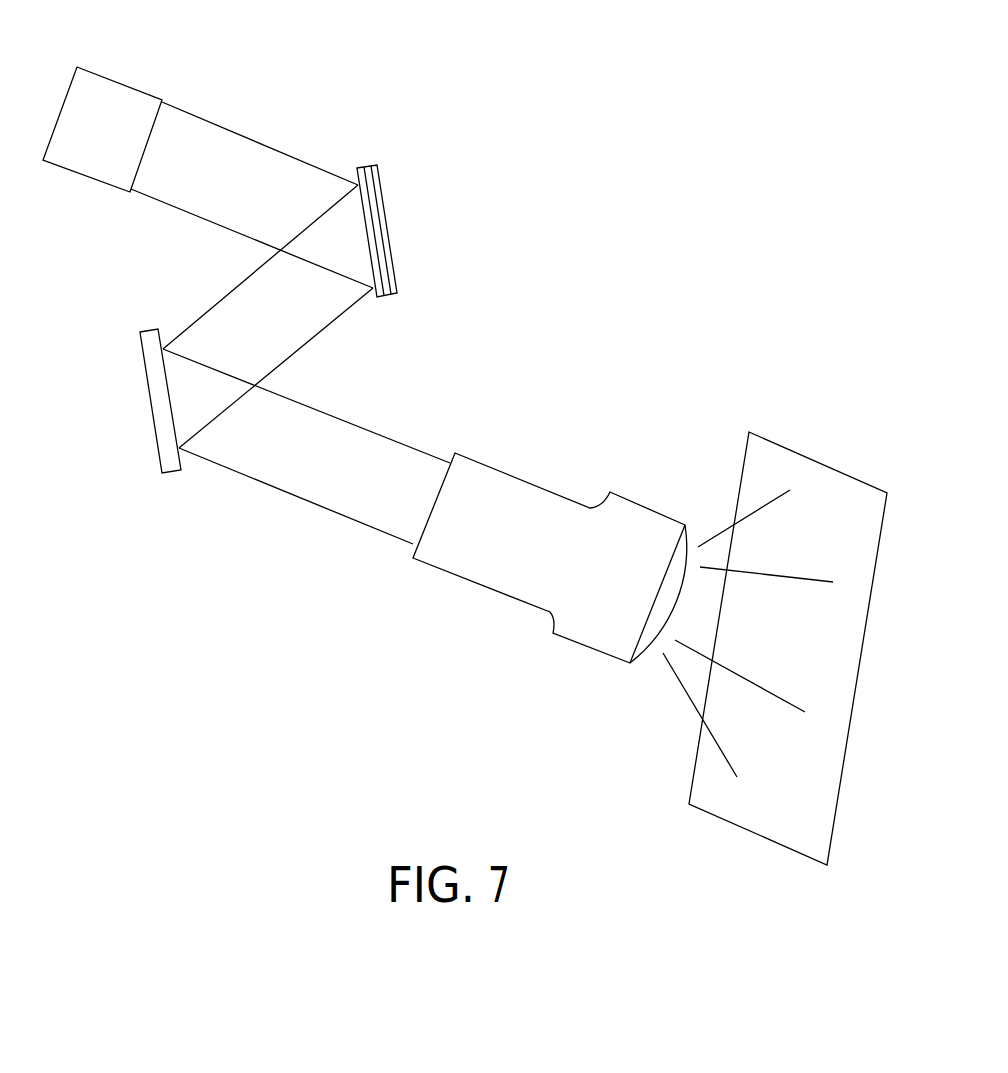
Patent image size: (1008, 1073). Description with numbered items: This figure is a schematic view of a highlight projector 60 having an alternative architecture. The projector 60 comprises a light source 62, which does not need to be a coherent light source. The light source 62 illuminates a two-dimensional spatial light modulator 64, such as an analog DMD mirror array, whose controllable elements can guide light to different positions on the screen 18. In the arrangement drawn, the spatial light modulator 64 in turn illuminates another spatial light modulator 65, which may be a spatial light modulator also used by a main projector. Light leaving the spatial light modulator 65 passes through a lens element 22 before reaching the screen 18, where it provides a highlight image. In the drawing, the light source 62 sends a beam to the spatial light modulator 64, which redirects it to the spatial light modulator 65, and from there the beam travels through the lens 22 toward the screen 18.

The projector 60 is at (378, 61).
The light source 62 is at (120, 80).
The 2D spatial light modulator 64 is at (393, 218).
The spatial light modulator 65 is at (152, 400).
The lens 22 is at (542, 483).
The screen 18 is at (765, 468).